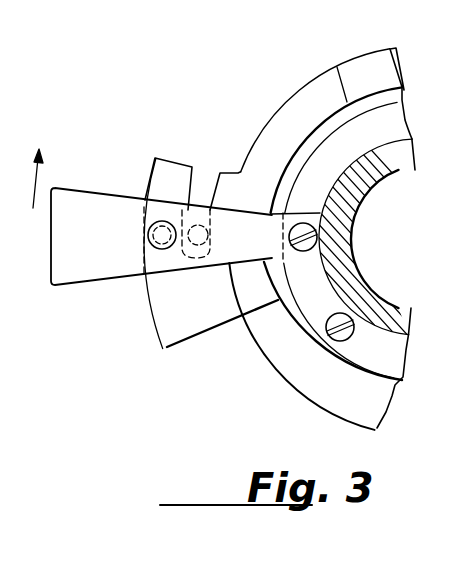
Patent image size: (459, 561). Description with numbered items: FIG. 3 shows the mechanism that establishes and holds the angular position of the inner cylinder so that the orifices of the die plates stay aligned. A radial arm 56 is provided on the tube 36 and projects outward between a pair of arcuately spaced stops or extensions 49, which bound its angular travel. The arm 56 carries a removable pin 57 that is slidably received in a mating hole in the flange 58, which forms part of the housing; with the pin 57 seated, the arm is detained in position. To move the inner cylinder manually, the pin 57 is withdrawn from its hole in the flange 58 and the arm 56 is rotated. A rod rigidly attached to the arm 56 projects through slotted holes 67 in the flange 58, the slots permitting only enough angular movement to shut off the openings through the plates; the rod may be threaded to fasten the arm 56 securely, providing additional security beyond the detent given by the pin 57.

The tube 36 is at (347, 280).
The stops or extensions 49 is at (362, 72).
The radial arm 56 is at (78, 198).
The removable pin 57 is at (148, 247).
The flange 58 is at (165, 165).
The slotted holes 67 is at (202, 182).